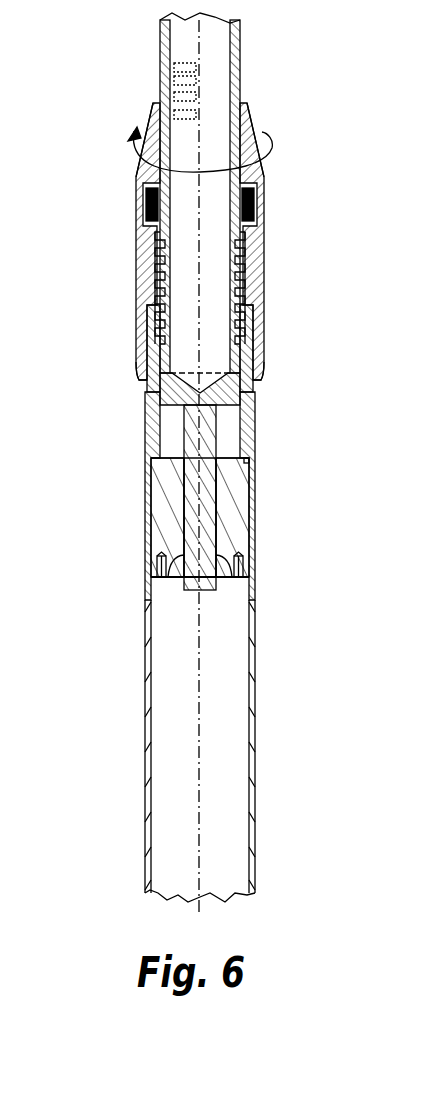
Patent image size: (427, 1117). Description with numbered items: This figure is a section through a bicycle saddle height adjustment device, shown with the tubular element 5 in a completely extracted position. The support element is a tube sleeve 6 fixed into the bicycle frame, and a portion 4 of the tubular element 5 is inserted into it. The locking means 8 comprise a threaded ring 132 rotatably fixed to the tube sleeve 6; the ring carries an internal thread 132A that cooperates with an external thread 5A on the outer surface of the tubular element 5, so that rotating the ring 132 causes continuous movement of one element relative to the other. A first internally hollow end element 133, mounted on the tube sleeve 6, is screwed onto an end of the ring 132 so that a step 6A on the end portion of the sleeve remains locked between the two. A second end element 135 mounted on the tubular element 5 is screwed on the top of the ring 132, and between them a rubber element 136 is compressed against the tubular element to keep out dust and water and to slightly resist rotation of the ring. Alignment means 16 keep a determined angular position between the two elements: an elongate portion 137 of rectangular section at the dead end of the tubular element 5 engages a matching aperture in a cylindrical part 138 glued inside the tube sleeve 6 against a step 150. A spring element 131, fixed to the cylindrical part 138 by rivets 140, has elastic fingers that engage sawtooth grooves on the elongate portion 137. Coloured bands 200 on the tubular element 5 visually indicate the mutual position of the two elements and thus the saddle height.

The portion of tubular element 4 is at (241, 378).
The tubular element 5 is at (247, 40).
The external thread 5A is at (171, 237).
The tube sleeve 6 is at (246, 436).
The step 6A is at (254, 350).
The locking means 8 is at (288, 231).
The alignment means 16 is at (174, 454).
The spring element 131 is at (223, 583).
The threaded ring 132 is at (257, 257).
The internal thread 132A is at (158, 260).
The first end element 133 is at (140, 378).
The second end element 135 is at (245, 126).
The rubber element 136 is at (261, 201).
The elongate portion 137 is at (207, 466).
The cylindrical part 138 is at (230, 527).
The rivets 140 is at (223, 577).
The step 150 is at (246, 461).
The coloured bands 200 is at (172, 78).